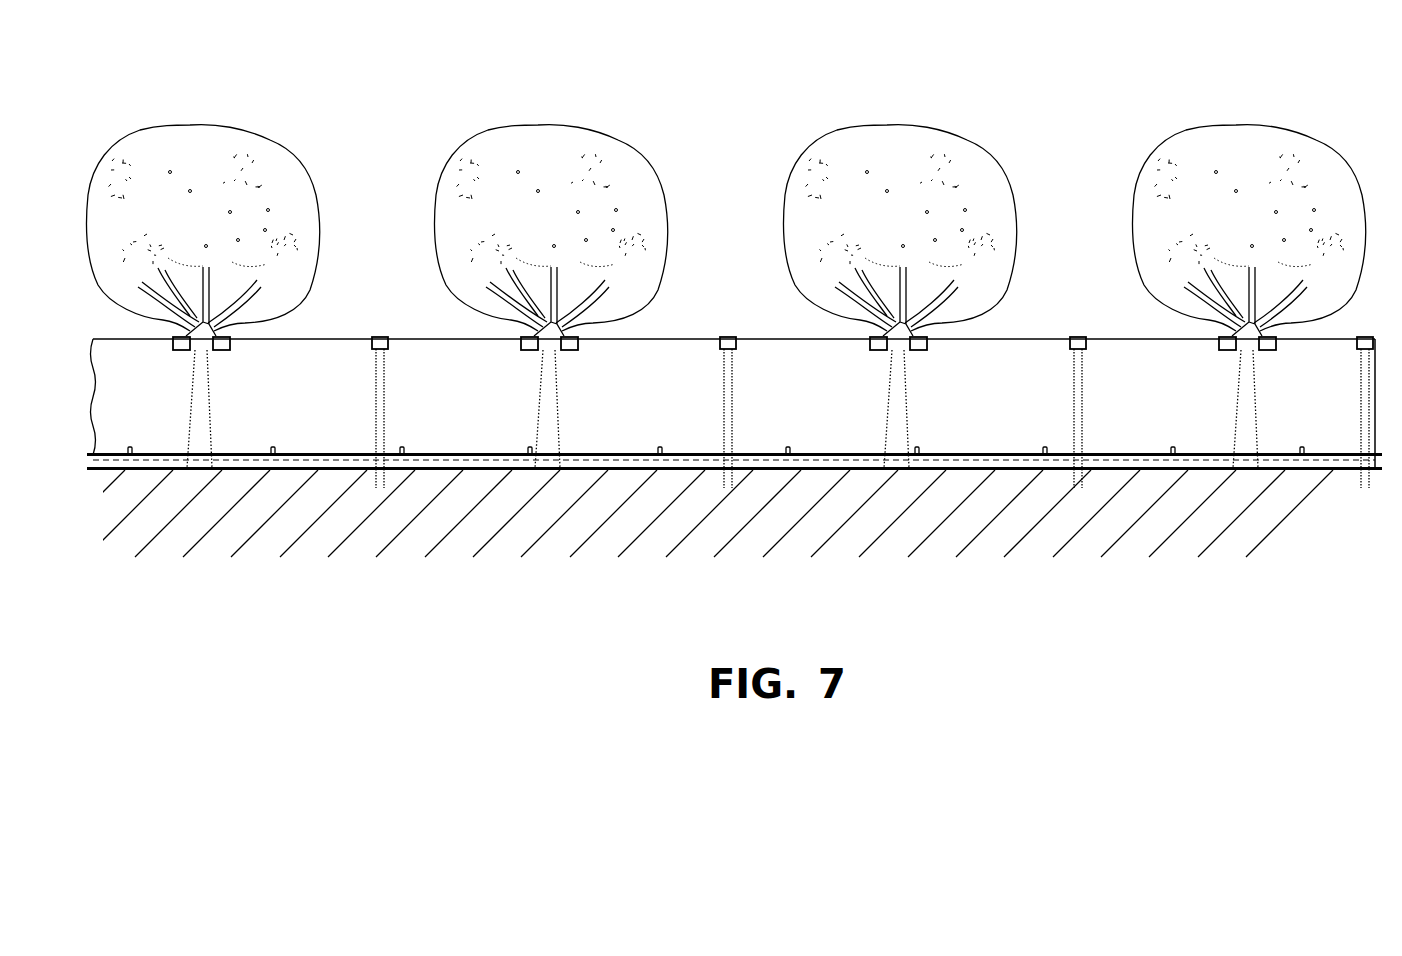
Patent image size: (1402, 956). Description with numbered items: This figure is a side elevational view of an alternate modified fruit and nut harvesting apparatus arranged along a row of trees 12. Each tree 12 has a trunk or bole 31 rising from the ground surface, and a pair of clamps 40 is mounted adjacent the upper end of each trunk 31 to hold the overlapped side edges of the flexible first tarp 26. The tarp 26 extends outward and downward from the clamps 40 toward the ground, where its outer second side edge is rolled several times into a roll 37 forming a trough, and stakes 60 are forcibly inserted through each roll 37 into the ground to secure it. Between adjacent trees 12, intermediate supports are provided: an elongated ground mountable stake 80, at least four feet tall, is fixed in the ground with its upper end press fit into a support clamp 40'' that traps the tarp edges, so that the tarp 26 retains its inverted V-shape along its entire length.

The tree 12 is at (726, 200).
The first tarp 26 is at (325, 338).
The tree trunk 31 is at (756, 409).
The roll 37 is at (630, 463).
The clamp 40 is at (700, 371).
The support clamp 40'' is at (883, 263).
The stake 60 is at (274, 452).
The ground mountable stake 80 is at (1356, 418).